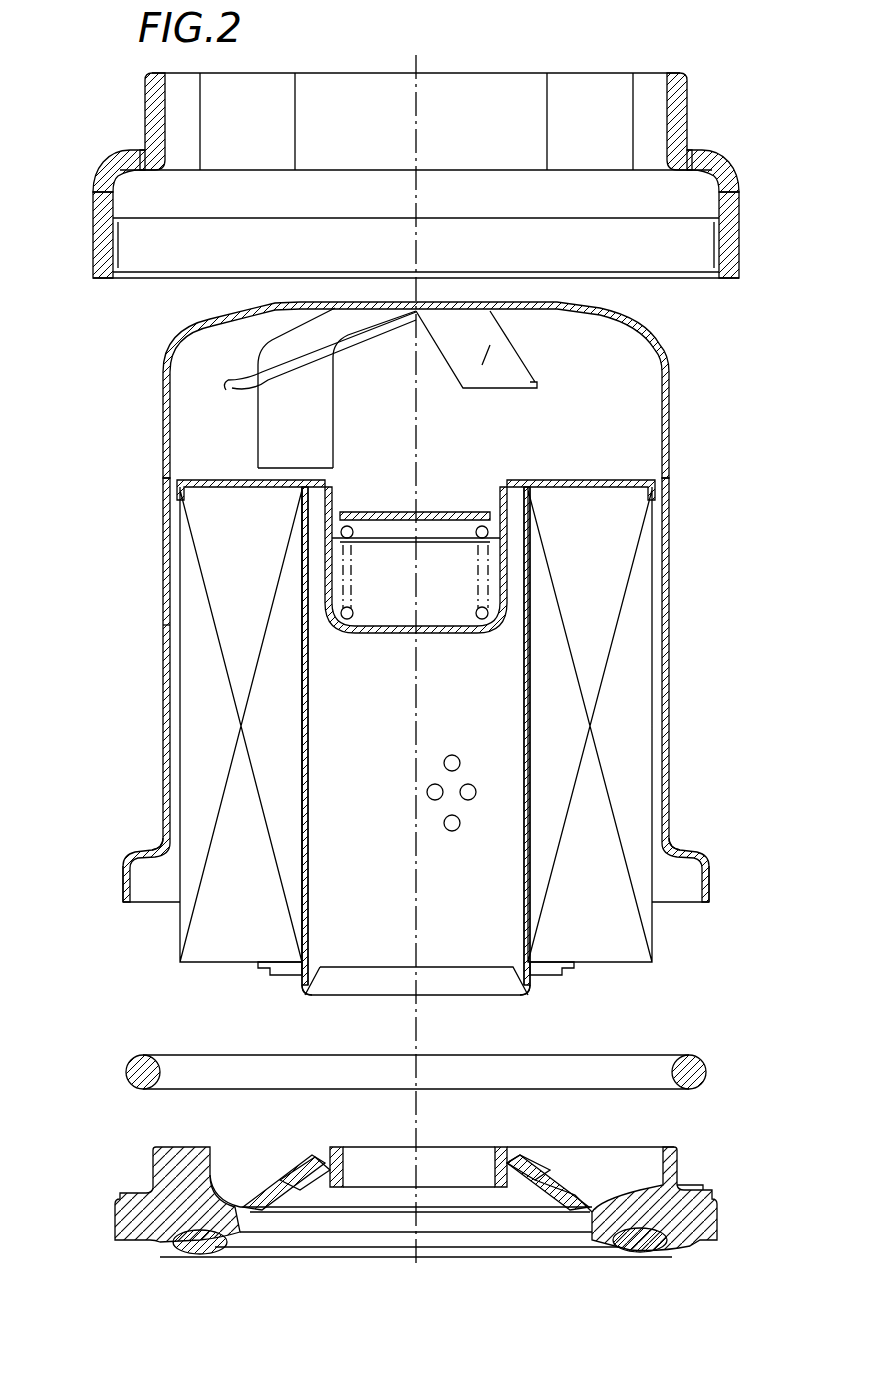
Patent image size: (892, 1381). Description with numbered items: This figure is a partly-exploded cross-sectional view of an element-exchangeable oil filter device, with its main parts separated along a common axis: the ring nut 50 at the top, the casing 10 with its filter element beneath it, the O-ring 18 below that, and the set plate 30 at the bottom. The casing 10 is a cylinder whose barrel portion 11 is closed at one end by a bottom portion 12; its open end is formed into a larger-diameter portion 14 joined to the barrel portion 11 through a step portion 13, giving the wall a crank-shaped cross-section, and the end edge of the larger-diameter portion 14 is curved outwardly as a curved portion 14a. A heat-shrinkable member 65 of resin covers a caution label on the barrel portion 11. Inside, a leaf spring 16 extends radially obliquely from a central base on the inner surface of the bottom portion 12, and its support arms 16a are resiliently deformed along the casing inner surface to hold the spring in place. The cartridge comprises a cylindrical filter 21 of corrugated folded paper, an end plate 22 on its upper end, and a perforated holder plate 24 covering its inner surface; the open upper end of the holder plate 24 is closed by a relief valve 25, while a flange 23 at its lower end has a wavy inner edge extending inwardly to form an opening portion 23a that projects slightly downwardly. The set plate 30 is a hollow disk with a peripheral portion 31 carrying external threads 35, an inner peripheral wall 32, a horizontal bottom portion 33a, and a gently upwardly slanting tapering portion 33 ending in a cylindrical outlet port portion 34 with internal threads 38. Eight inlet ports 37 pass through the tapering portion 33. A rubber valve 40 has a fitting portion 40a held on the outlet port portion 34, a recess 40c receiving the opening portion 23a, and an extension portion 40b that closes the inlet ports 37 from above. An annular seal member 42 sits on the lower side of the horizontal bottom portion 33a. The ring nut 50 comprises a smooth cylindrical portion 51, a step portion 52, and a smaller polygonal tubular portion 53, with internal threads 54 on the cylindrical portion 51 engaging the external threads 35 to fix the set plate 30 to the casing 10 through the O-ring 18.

The casing 10 is at (138, 460).
The barrel portion 11 is at (672, 602).
The bottom portion 12 is at (268, 301).
The step portion 13 is at (158, 845).
The larger-diameter portion 14 is at (123, 878).
The curved portion 14a is at (122, 903).
The leaf spring 16 is at (497, 343).
The support arms 16a is at (304, 413).
The O-ring 18 is at (697, 1060).
The cylindrical filter 21 is at (612, 718).
The end plate 22 is at (508, 480).
The flange 23 is at (280, 975).
The opening portion 23a is at (308, 994).
The holder plate 24 is at (423, 940).
The relief valve 25 is at (443, 523).
The set plate 30 is at (134, 1168).
The peripheral portion 31 is at (700, 1187).
The inner peripheral wall 32 is at (678, 1148).
The tapering portion 33 is at (550, 1198).
The horizontal bottom portion 33a is at (192, 1150).
The outlet port portion 34 is at (505, 1147).
The external threads 35 is at (112, 1220).
The inlet ports 37 is at (265, 1207).
The internal threads 38 is at (346, 1162).
The valve 40 is at (258, 1160).
The fitting portion 40a is at (304, 1150).
The extension portion 40b is at (580, 1160).
The recess 40c is at (527, 1148).
The annular seal member 42 is at (206, 1253).
The ring nut 50 is at (726, 150).
The cylindrical portion 51 is at (95, 240).
The step portion 52 is at (112, 162).
The polygonal tubular portion 53 is at (147, 123).
The internal threads 54 is at (128, 270).
The heat-shrinkable member 65 is at (160, 625).